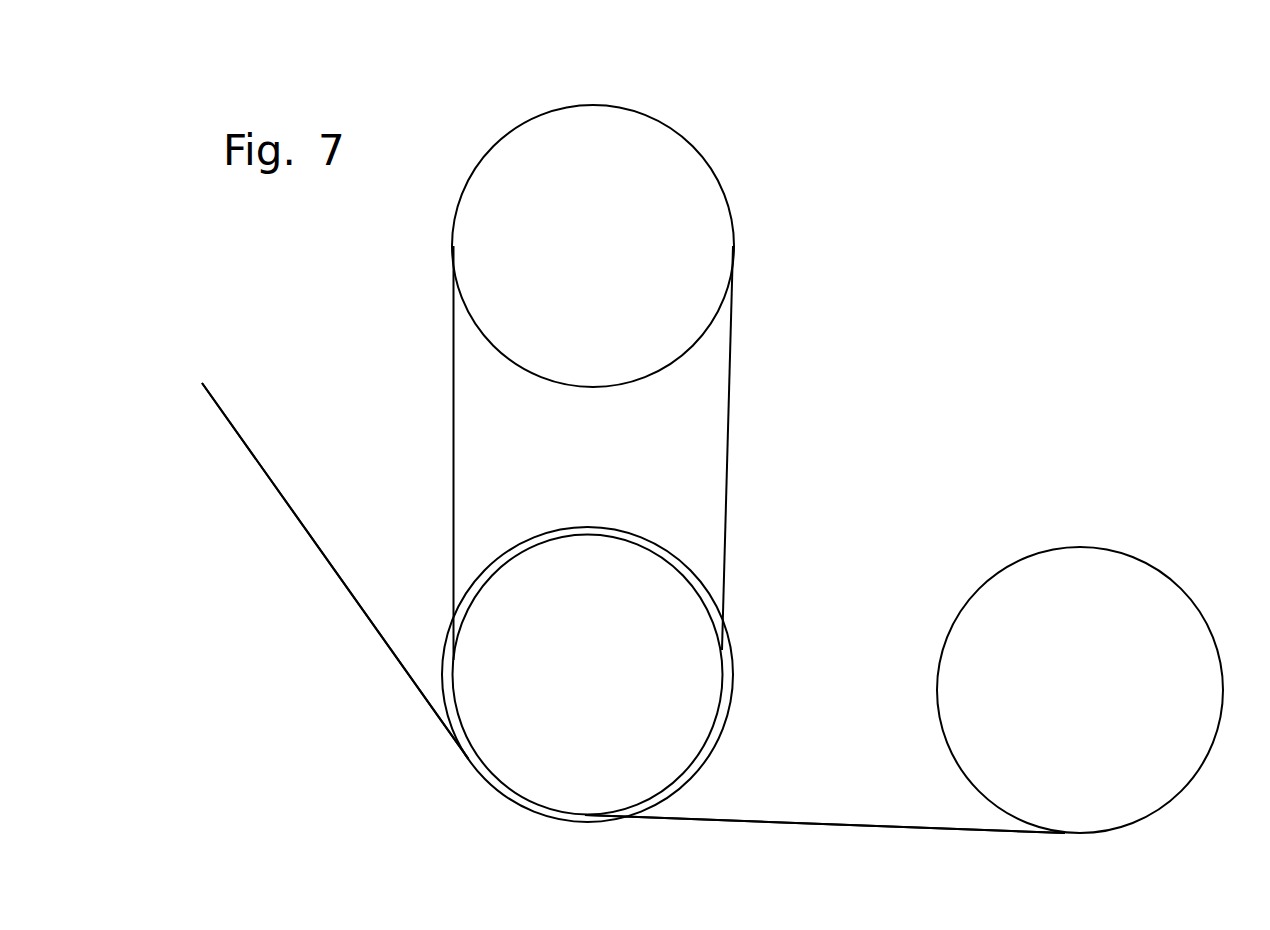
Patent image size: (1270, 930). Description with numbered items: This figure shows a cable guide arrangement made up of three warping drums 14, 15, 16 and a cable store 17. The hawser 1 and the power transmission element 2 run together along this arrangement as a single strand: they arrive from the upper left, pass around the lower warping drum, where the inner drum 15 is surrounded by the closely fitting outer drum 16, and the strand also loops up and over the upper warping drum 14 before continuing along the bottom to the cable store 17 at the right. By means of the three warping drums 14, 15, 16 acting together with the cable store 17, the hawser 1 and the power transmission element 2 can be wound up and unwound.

The hawser 1 is at (243, 440).
The power transmission element 2 is at (243, 440).
The warping drum 14 is at (722, 233).
The warping drum 15 is at (707, 603).
The warping drum 16 is at (708, 707).
The cable store 17 is at (1075, 558).